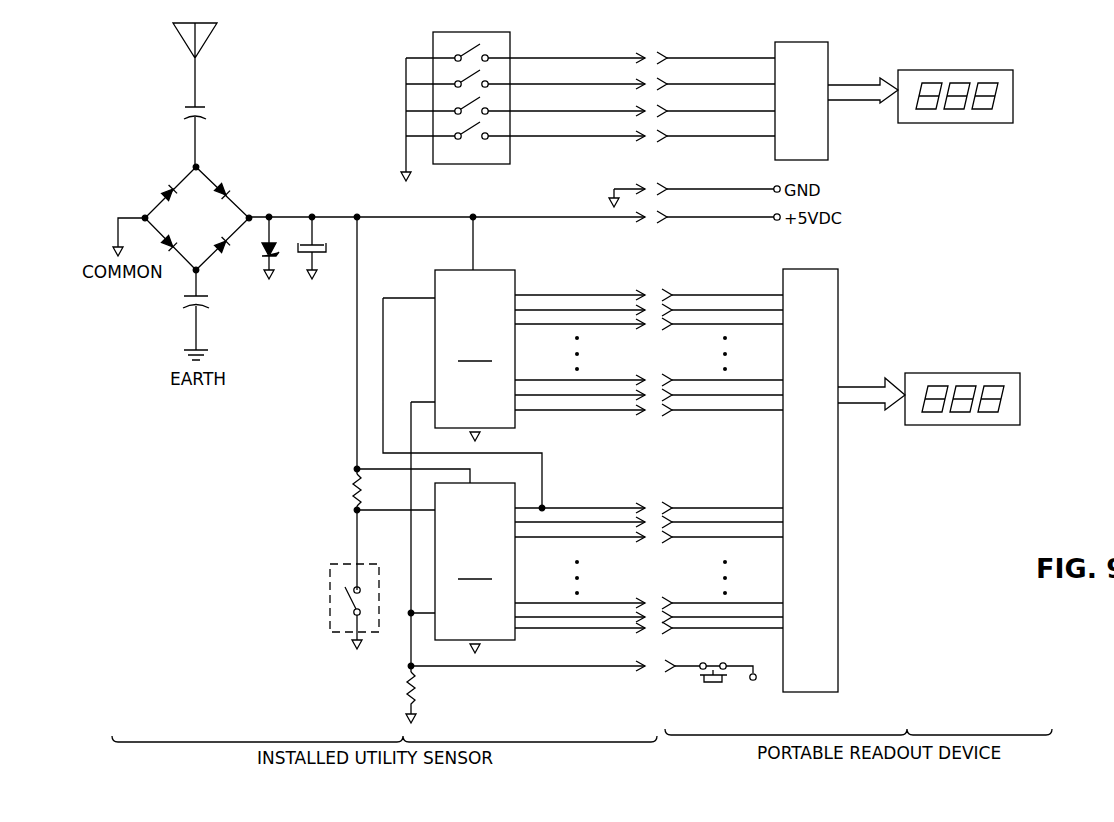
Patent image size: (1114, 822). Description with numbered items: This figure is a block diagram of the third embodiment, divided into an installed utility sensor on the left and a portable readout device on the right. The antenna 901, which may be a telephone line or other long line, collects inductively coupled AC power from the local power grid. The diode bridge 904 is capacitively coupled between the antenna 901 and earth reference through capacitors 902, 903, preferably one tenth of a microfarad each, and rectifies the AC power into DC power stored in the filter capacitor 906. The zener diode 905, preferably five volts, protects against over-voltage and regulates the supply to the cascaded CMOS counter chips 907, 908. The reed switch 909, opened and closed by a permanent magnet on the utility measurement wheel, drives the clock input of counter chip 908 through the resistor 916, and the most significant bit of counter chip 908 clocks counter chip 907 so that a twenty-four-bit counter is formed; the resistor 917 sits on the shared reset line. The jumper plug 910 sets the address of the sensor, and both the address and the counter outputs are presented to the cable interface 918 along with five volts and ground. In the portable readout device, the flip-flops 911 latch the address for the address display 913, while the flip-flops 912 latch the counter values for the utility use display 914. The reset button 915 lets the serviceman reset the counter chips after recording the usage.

The antenna 901 is at (205, 42).
The capacitor 902 is at (200, 110).
The capacitor 903 is at (200, 308).
The diode bridge 904 is at (216, 235).
The zener diode 905 is at (264, 258).
The filter capacitor 906 is at (318, 258).
The counter chip 907 is at (475, 355).
The counter chip 908 is at (475, 568).
The reed switch 909 is at (333, 634).
The jumper plug 910 is at (510, 35).
The flip-flop 911 is at (780, 42).
The flip-flop 912 is at (838, 292).
The address display 913 is at (939, 70).
The utility use display 914 is at (977, 373).
The reset button 915 is at (708, 684).
The resistor 916 is at (356, 492).
The resistor 917 is at (418, 696).
The cable interface 918 is at (655, 50).